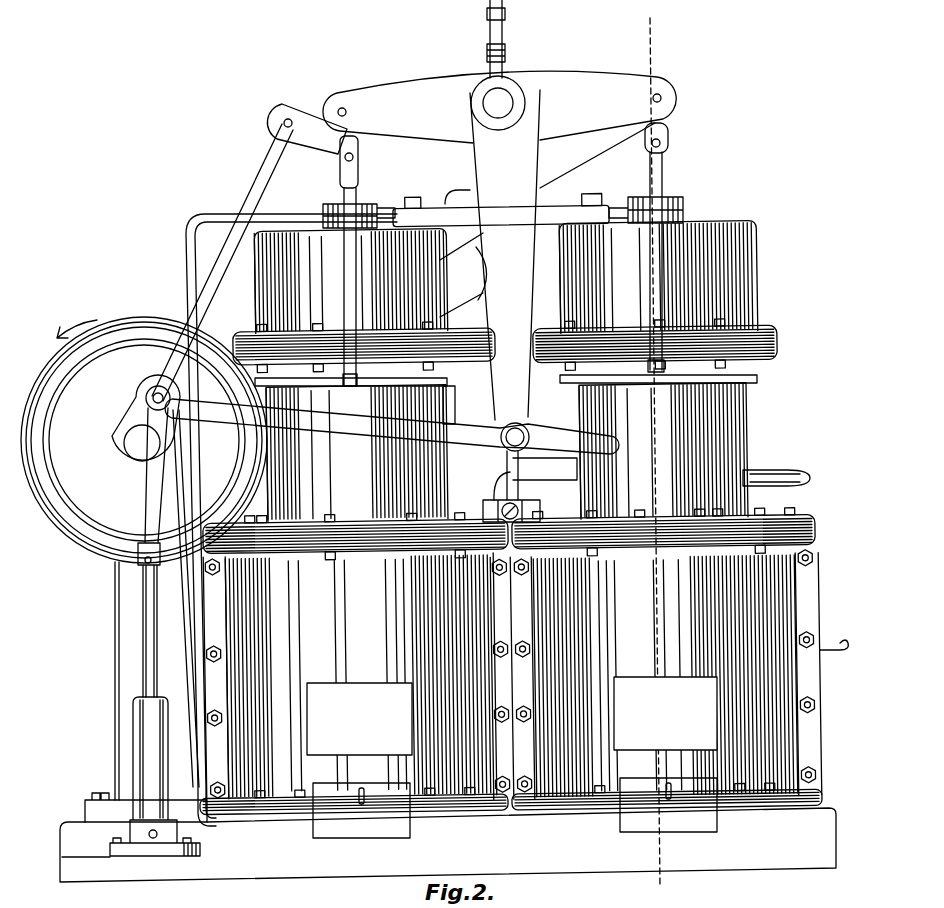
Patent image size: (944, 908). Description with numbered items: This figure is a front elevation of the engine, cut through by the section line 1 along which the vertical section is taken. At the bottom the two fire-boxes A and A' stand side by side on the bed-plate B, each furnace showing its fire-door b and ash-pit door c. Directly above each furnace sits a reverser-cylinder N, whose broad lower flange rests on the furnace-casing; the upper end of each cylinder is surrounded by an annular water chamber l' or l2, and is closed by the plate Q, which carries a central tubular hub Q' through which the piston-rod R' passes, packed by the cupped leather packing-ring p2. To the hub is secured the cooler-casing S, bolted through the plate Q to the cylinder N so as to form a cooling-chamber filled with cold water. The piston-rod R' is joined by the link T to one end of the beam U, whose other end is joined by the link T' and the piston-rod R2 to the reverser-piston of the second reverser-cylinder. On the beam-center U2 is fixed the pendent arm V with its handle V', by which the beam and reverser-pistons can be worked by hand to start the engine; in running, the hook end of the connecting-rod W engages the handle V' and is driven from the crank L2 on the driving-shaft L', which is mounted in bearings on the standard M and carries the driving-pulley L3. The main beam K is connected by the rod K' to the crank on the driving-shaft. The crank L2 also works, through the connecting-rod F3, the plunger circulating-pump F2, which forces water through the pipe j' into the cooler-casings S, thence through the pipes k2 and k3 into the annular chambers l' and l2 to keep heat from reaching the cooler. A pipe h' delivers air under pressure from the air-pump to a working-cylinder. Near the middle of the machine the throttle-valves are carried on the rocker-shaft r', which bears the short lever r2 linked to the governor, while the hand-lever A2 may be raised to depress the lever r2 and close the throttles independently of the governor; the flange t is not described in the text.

The section line 1 is at (657, 452).
The beam U is at (499, 129).
The beam-center U2 is at (498, 103).
The pendent arm V is at (505, 270).
The handle V' is at (462, 243).
The link T is at (671, 135).
The link T' is at (307, 131).
The beam K is at (501, 191).
The rod K' is at (222, 262).
The piston-rod R2 is at (342, 190).
The piston-rod R' is at (670, 262).
The pipe k3 is at (359, 255).
The pipe k2 is at (646, 251).
The cupped leather packing-ring p2 is at (680, 205).
The tubular hub Q' is at (702, 210).
The pipe j' is at (284, 527).
The cooler-casing S is at (506, 277).
The plate Q is at (505, 341).
The annular chamber l2 is at (351, 382).
The annular chamber l' is at (658, 376).
The cylinder N is at (507, 452).
The pipe h' is at (457, 405).
The driving-pulley L3 is at (144, 440).
The crank L2 is at (146, 417).
The driving-shaft L' is at (142, 443).
The hook connecting-rod W is at (392, 426).
The connecting-rod F3 is at (150, 495).
The standard M is at (118, 622).
The plunger circulating-pump F2 is at (146, 776).
The hand-lever A2 is at (673, 471).
The short lever r2 is at (490, 500).
The rocker-shaft r' is at (498, 504).
The flange t is at (509, 534).
The fire-box A' is at (350, 676).
The fire-box A is at (669, 675).
The fire-door b is at (512, 716).
The ash-pit door c is at (515, 808).
The bed-plate B is at (448, 832).